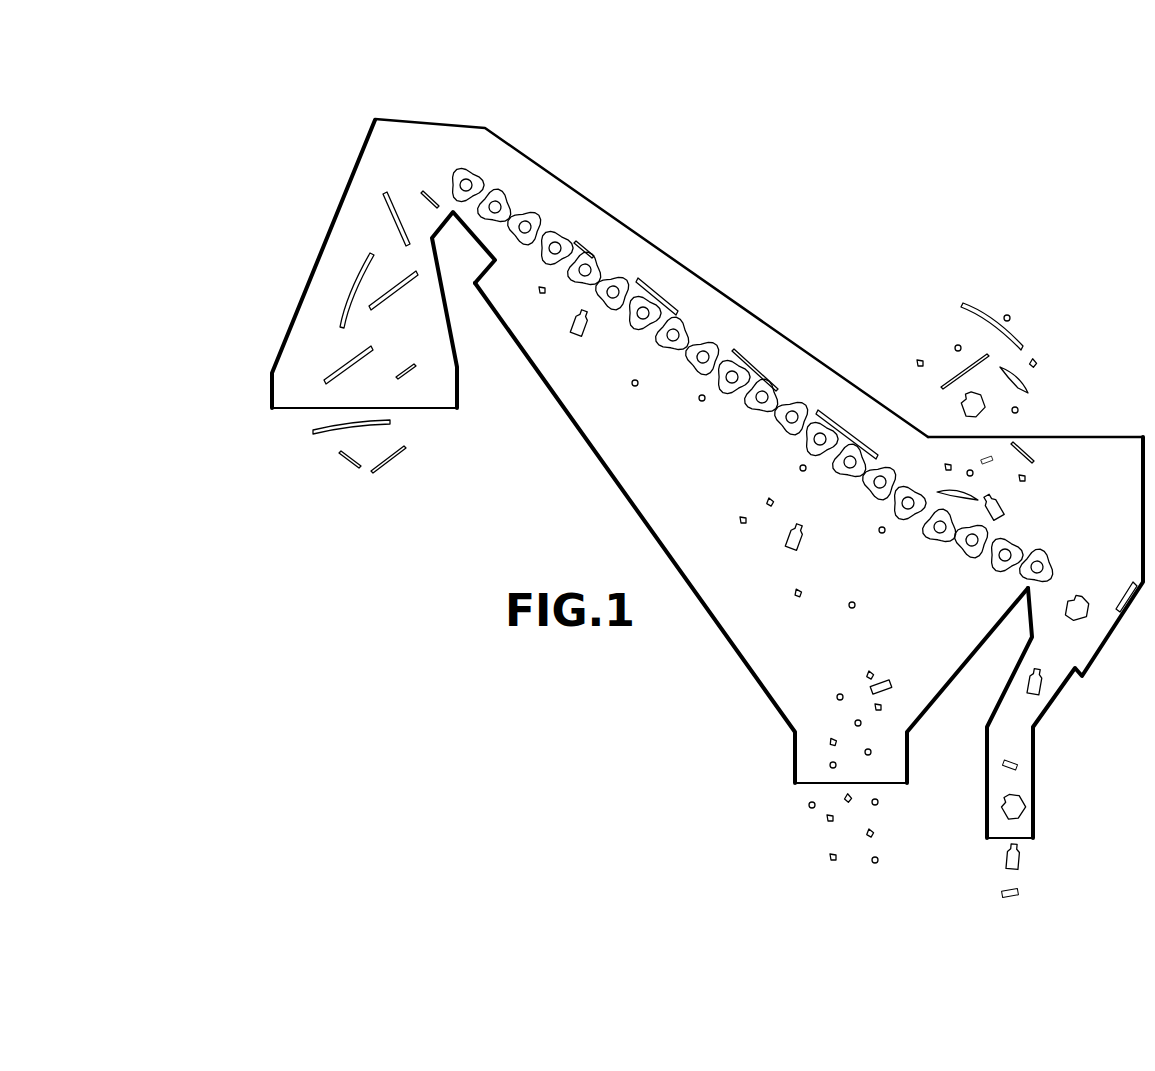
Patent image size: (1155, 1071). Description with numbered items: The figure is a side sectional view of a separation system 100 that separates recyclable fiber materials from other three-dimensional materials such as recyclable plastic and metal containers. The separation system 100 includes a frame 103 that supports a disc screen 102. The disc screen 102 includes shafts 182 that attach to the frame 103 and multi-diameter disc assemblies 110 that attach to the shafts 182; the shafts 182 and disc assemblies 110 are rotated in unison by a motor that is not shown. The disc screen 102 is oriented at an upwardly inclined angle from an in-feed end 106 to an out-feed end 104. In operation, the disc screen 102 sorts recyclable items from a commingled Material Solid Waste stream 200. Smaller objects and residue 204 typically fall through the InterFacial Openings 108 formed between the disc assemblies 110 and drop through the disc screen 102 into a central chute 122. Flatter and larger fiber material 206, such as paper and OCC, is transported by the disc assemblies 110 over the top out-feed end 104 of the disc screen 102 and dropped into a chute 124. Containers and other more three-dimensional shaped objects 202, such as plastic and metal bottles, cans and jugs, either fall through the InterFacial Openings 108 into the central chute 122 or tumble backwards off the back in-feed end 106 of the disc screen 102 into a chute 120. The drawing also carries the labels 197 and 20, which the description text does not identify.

The separation system 100 is at (862, 238).
The disc screen 102 is at (703, 327).
The frame 103 is at (1108, 435).
The out-feed end 104 is at (448, 150).
The in-feed end 106 is at (1047, 533).
The InterFacial Openings (IFOs) 108 is at (643, 340).
The multi-diameter disc assemblies 110 is at (567, 236).
The chute 120 is at (1037, 792).
The central chute 122 is at (780, 712).
The chute 124 is at (272, 390).
The shafts 182 is at (528, 225).
The end of roller bed 197 is at (987, 560).
The pipe segment 20 is at (897, 678).
The Material Solid Waste (MSW) stream 200 is at (1018, 302).
The three dimensional shaped objects 202 is at (785, 540).
The smaller objects and residue 204 is at (635, 386).
The fiber material 206 is at (398, 217).